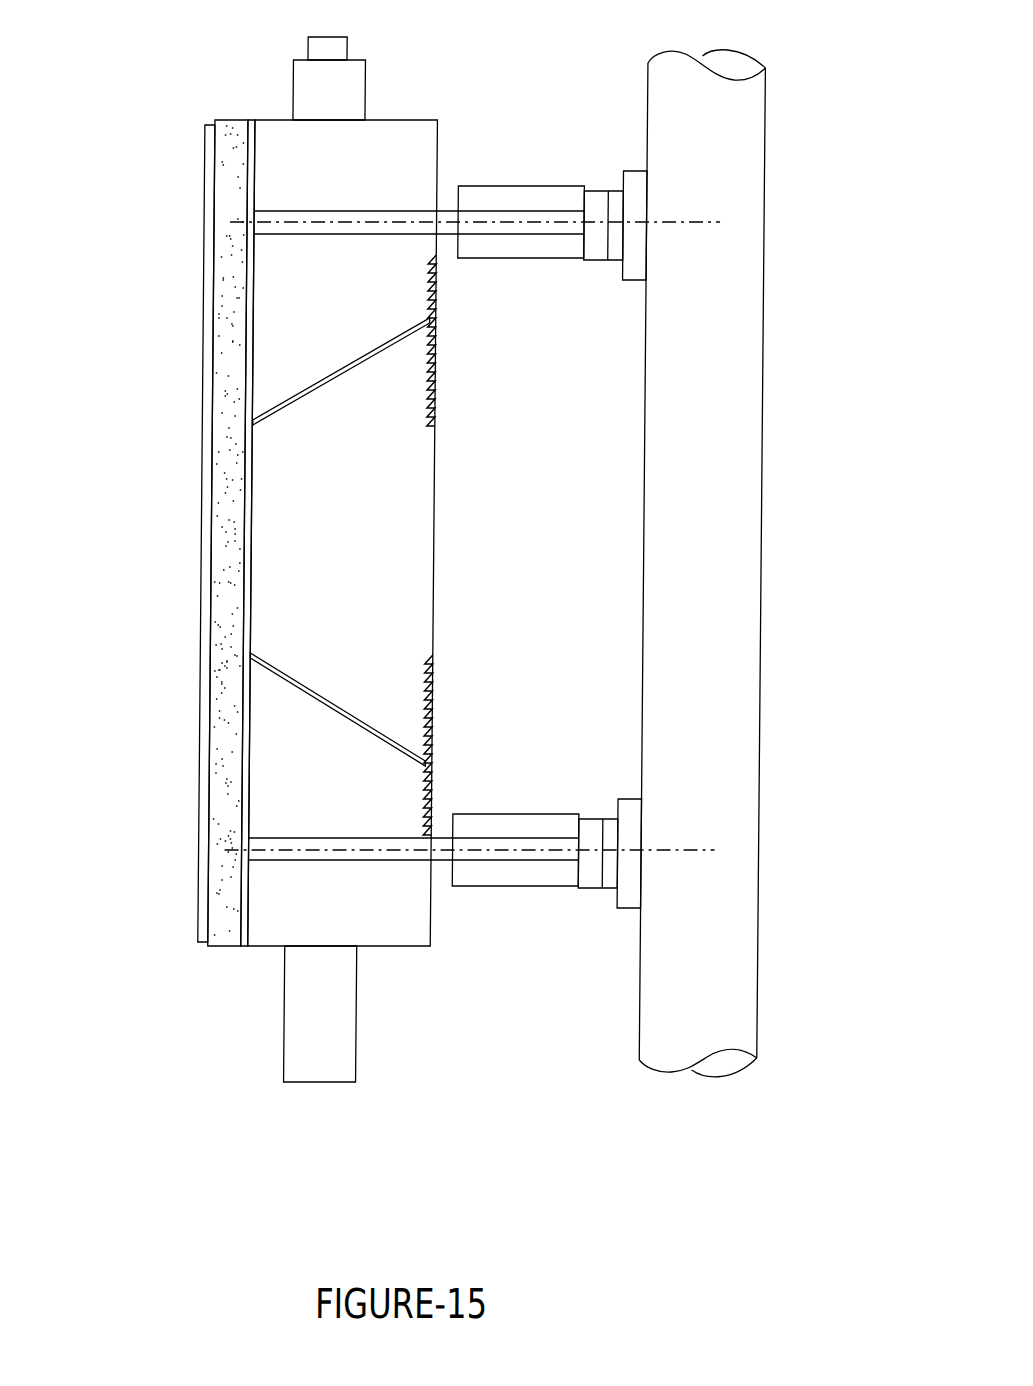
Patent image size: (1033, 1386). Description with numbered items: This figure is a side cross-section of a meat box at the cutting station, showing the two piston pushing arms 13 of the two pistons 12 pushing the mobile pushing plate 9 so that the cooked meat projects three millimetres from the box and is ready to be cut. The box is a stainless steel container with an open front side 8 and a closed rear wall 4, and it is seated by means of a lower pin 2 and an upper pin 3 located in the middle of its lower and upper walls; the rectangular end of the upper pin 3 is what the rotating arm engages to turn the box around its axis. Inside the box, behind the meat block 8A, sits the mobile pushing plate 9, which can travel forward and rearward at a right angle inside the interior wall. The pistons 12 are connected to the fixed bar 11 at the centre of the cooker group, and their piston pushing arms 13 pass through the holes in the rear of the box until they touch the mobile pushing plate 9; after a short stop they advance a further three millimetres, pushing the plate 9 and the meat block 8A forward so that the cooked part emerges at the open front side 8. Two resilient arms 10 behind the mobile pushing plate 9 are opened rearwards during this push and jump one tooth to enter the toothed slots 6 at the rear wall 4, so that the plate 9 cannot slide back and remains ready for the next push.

The lower pin 2 is at (332, 1032).
The upper pin 3 is at (321, 100).
The rear wall 4 is at (438, 566).
The toothed slots 6 is at (431, 301).
The open front side 8 is at (208, 937).
The meat block 8A is at (239, 150).
The mobile pushing plate 9 is at (252, 497).
The resilient arms 10 is at (300, 392).
The fixed bar 11 is at (706, 463).
The pistons 12 is at (544, 262).
The piston pushing arms 13 is at (392, 208).